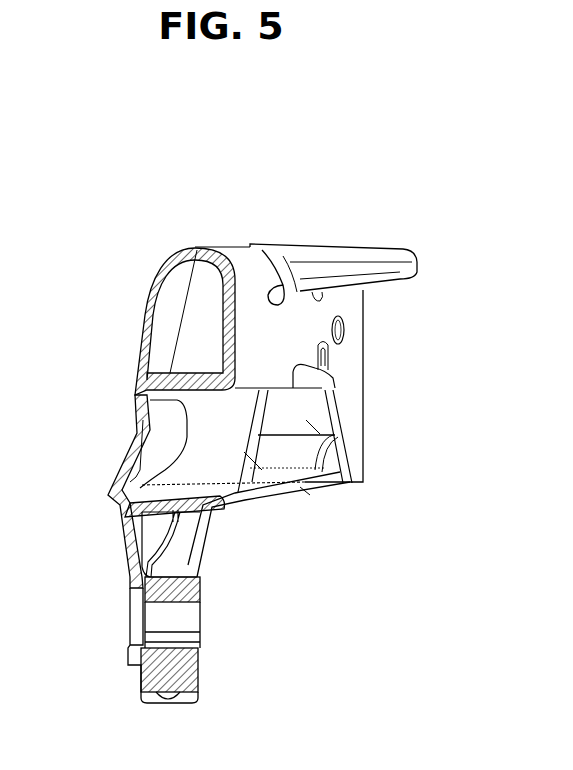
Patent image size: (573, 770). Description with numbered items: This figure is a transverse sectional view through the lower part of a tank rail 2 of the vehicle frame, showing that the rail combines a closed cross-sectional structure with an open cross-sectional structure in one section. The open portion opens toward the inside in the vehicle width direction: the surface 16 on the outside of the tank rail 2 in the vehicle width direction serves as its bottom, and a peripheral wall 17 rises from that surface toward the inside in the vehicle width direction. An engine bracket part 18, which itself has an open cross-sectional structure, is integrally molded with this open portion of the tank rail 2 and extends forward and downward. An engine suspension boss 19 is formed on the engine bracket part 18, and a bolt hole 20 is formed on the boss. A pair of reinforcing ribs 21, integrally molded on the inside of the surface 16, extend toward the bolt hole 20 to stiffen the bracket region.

The tank rail 2 is at (222, 247).
The surface 16 is at (157, 424).
The peripheral wall 17 is at (298, 478).
The engine bracket part 18 is at (135, 572).
The engine suspension boss 19 is at (197, 680).
The bolt hole 20 is at (185, 602).
The reinforcing ribs 21 is at (216, 452).